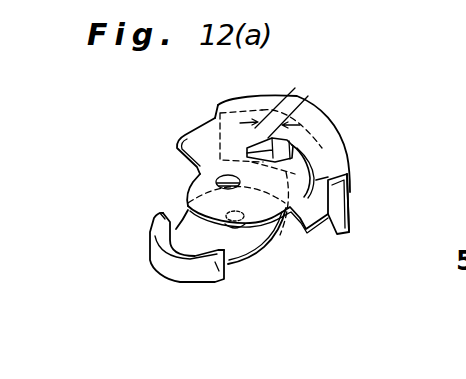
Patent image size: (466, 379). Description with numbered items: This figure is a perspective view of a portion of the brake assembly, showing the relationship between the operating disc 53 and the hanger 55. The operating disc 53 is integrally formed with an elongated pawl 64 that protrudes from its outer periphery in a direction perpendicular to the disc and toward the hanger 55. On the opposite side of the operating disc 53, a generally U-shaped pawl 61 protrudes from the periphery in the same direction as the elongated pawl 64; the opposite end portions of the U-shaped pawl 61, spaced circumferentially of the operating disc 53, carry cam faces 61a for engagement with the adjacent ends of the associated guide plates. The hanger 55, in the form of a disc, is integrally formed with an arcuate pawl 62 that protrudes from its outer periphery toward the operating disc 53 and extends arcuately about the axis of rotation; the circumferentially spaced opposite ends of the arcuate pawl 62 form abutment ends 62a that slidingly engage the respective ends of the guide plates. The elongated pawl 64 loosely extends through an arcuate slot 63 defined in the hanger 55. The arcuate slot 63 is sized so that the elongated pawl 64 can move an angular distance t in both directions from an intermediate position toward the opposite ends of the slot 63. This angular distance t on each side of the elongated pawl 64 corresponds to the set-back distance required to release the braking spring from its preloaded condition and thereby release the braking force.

The operating disc 53 is at (256, 238).
The hanger 55 is at (320, 170).
The U-shaped pawl 61 is at (163, 272).
The cam faces 61a is at (173, 237).
The arcuate pawl 62 is at (332, 234).
The abutment ends 62a is at (220, 145).
The arcuate slot 63 is at (302, 167).
The elongated pawl 64 is at (290, 140).
The angular distance t is at (295, 95).